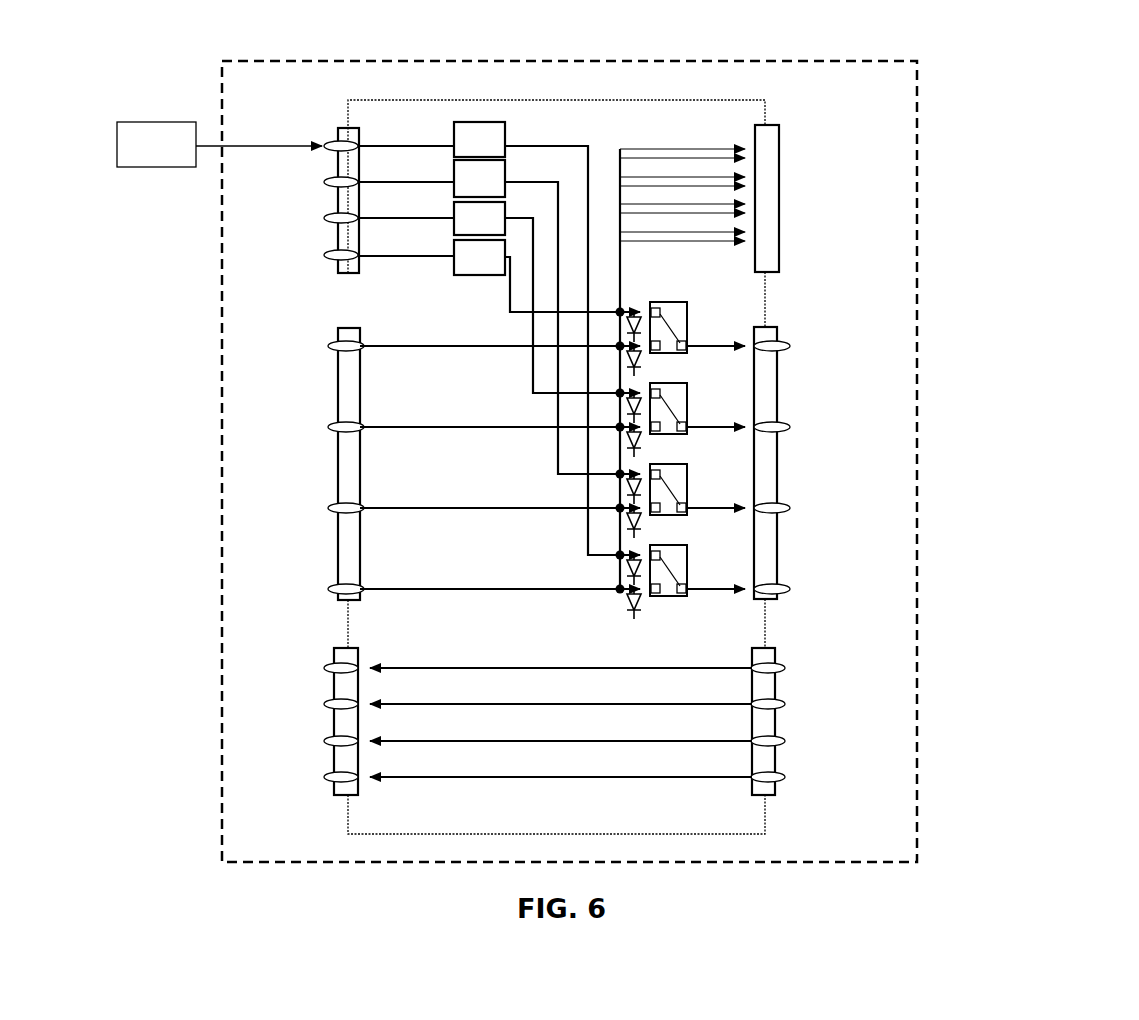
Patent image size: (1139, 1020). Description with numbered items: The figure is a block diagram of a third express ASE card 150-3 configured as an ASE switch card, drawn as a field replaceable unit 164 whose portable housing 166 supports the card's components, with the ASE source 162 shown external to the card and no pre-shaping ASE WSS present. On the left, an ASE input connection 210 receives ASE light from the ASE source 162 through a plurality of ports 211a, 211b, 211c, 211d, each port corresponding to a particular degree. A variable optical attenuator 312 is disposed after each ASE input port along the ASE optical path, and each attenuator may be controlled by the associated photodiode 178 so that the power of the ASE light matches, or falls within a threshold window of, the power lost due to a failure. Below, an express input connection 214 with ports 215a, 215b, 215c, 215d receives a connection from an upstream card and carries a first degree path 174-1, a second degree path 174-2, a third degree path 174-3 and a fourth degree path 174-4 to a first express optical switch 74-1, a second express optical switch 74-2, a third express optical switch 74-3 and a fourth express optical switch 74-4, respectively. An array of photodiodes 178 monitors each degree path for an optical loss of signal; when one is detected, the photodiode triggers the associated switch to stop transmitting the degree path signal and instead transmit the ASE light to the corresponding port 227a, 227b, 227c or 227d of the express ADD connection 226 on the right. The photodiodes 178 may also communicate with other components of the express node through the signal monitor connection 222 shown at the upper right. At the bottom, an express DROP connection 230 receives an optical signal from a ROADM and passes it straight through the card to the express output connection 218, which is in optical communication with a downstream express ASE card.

The third express ASE card 150-3 is at (617, 442).
The ASE source 162 is at (219, 144).
The field replaceable unit 164 is at (922, 430).
The portable housing 166 is at (773, 98).
The ASE input connection 210 is at (358, 198).
The ASE input port 211a is at (362, 150).
The ASE input port 211b is at (362, 186).
The ASE input port 211c is at (362, 222).
The ASE input port 211d is at (362, 258).
The variable optical attenuator 312 is at (537, 338).
The signal monitor connection 222 is at (780, 198).
The express input connection 214 is at (348, 326).
The express input port 215a is at (328, 347).
The express input port 215b is at (328, 427).
The express input port 215c is at (328, 508).
The express input port 215d is at (328, 589).
The first degree path 174-1 is at (464, 345).
The second degree path 174-2 is at (464, 426).
The third degree path 174-3 is at (464, 507).
The fourth degree path 174-4 is at (464, 588).
The photodiode 178 is at (626, 596).
The first express optical switch 74-1 is at (687, 328).
The second express optical switch 74-2 is at (687, 409).
The third express optical switch 74-3 is at (687, 490).
The fourth express optical switch 74-4 is at (687, 571).
The express ADD connection 226 is at (778, 328).
The express ADD port 227a is at (790, 348).
The express ADD port 227b is at (790, 430).
The express ADD port 227c is at (790, 508).
The express ADD port 227d is at (790, 587).
The express output connection 218 is at (334, 794).
The express DROP connection 230 is at (776, 795).